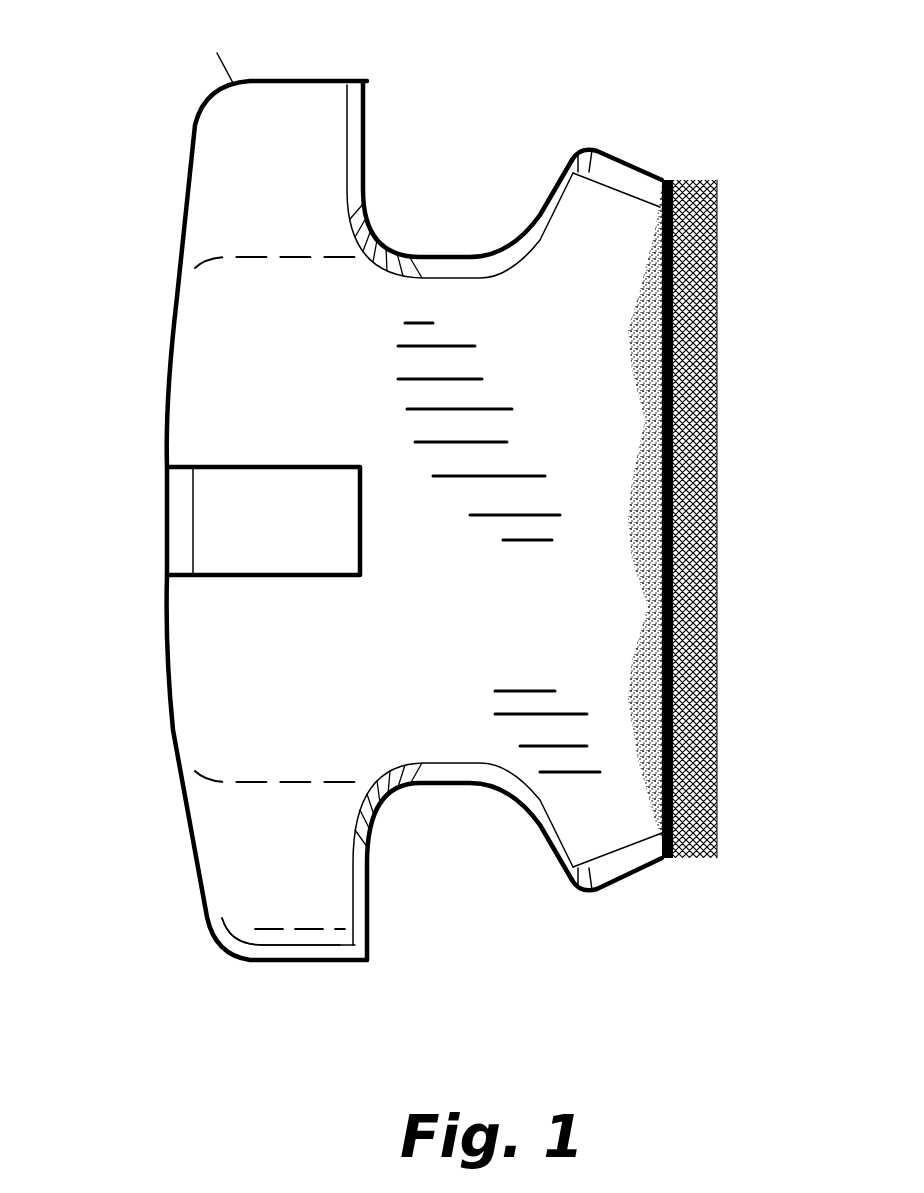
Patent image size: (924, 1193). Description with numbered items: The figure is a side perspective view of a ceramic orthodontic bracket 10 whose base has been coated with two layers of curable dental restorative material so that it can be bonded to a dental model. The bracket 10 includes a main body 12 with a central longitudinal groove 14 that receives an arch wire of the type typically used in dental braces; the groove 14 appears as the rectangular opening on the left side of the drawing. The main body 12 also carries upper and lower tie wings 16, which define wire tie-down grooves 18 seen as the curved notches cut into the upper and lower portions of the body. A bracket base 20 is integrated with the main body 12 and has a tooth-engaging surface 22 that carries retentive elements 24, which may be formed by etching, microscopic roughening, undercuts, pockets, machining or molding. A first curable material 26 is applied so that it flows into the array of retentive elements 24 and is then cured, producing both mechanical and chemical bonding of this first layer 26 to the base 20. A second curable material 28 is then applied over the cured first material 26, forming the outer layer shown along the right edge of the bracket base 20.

The ceramic bracket 10 is at (148, 168).
The main body 12 is at (613, 167).
The central longitudinal groove 14 is at (167, 520).
The upper and lower tie wings 16 is at (257, 997).
The wire tie-down grooves 18 is at (423, 278).
The bracket base 20 is at (618, 230).
The tooth-engaging surface 22 is at (677, 813).
The retentive elements 24 is at (677, 297).
The first curable material 26 is at (670, 383).
The second curable material 28 is at (715, 437).